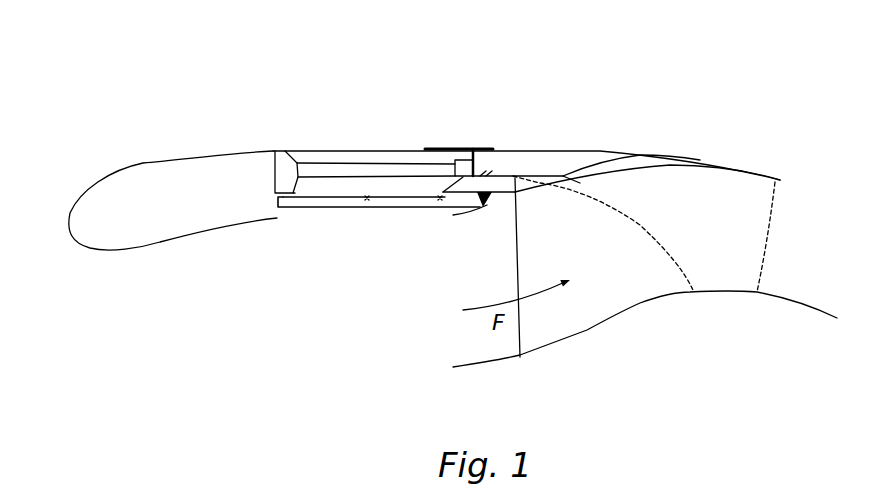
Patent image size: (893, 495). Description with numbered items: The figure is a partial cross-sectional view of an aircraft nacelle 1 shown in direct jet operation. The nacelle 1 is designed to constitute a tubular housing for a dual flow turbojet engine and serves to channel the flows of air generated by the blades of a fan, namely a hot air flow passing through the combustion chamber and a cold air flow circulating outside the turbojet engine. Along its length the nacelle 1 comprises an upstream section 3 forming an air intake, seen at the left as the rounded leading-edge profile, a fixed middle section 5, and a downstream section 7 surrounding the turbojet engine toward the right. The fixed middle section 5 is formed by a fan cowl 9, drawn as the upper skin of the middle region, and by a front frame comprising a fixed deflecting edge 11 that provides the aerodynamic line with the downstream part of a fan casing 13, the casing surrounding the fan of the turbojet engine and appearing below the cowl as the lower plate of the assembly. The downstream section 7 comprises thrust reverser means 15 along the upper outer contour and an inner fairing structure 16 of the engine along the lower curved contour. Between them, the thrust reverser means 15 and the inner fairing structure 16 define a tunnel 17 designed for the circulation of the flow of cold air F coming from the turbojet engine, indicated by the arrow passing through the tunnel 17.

The nacelle 1 is at (258, 88).
The upstream section 3 is at (140, 145).
The fixed middle section 5 is at (387, 125).
The downstream section 7 is at (658, 113).
The fan cowl 9 is at (423, 143).
The fixed deflecting edge 11 is at (473, 218).
The fan casing 13 is at (400, 213).
The thrust reverser means 15 is at (566, 128).
The inner fairing structure 16 is at (657, 312).
The tunnel 17 is at (612, 255).